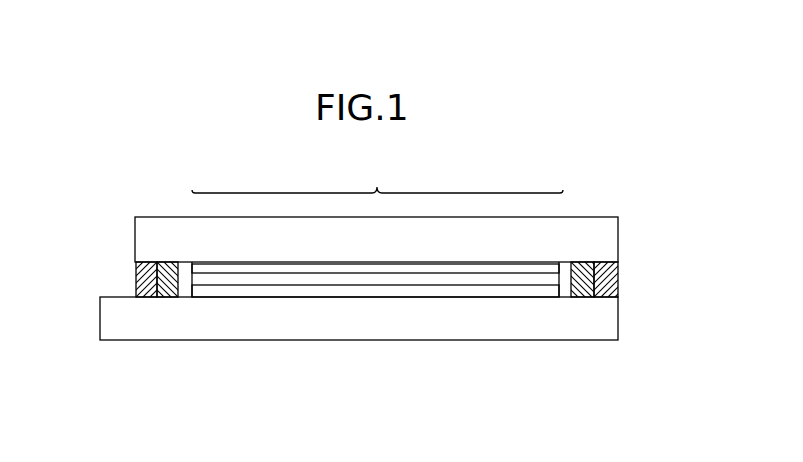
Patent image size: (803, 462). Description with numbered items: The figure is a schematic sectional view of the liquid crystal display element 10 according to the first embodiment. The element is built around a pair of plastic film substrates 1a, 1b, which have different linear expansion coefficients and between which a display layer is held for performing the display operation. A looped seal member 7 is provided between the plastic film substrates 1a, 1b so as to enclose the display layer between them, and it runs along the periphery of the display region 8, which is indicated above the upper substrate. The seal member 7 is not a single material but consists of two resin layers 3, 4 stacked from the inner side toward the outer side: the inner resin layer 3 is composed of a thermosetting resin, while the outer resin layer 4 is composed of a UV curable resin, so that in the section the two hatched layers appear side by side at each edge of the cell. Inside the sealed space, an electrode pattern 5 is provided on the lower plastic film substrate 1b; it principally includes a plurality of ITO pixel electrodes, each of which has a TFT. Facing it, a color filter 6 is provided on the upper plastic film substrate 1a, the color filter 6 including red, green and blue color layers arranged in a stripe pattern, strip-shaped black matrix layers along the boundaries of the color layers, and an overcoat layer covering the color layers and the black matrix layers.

The plastic film substrate 1a is at (142, 242).
The plastic film substrate 1b is at (103, 323).
The resin layer 3 is at (172, 297).
The resin layer 4 is at (133, 278).
The electrode pattern 5 is at (400, 288).
The color filter 6 is at (301, 268).
The looped seal member 7 is at (151, 313).
The display region 8 is at (377, 175).
The liquid crystal display element 10 is at (641, 160).